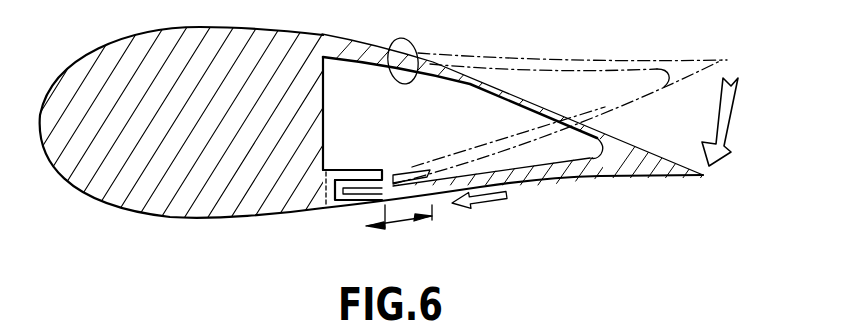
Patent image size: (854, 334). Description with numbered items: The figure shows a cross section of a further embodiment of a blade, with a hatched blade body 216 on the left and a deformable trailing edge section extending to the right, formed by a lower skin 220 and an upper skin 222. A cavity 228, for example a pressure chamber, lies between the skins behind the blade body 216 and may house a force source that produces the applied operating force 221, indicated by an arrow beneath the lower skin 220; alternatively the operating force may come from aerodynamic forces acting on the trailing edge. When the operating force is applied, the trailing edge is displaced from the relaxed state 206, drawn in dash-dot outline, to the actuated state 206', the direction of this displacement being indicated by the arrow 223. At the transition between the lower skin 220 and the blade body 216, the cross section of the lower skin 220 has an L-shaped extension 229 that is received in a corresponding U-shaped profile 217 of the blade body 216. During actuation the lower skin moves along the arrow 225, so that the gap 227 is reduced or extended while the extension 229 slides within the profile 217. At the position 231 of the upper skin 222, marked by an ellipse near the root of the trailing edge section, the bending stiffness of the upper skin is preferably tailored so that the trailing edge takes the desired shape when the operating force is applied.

The blade body 216 is at (167, 53).
The U-shaped profile 217 is at (335, 168).
The lower skin 220 is at (556, 172).
The operating force 221 is at (488, 205).
The upper skin 222 is at (480, 60).
The arrow indicating displacement 223 is at (725, 128).
The arrow of lower skin movement 225 is at (411, 220).
The gap 227 is at (390, 188).
The cavity 228 is at (482, 131).
The L-shaped extension 229 is at (343, 206).
The position of the upper skin 231 is at (417, 44).
The relaxed state 206 is at (560, 107).
The actuated state 206' is at (671, 172).